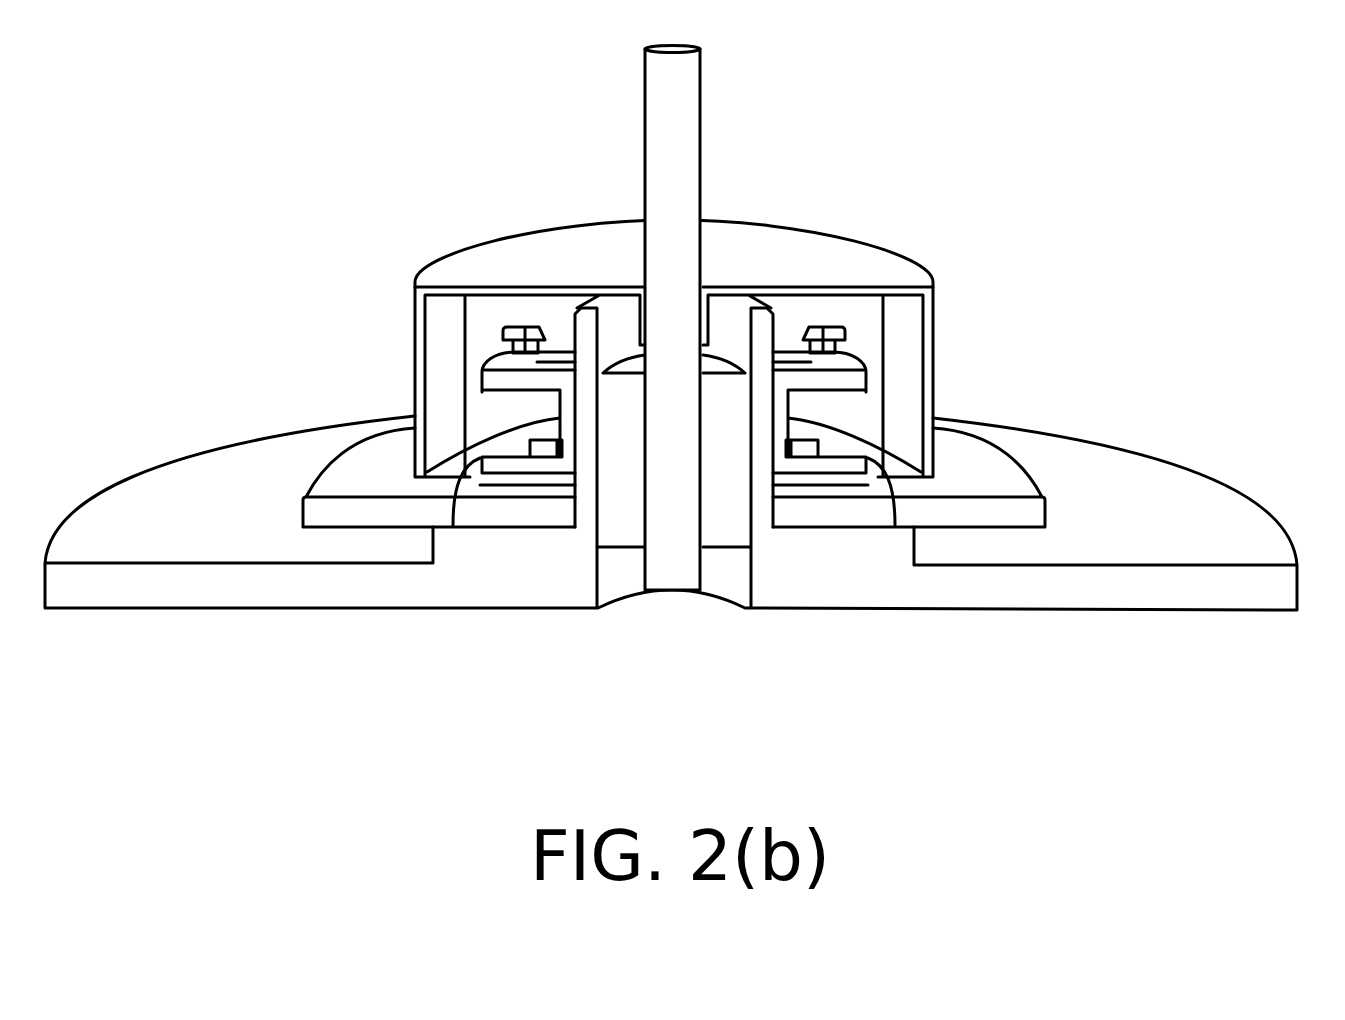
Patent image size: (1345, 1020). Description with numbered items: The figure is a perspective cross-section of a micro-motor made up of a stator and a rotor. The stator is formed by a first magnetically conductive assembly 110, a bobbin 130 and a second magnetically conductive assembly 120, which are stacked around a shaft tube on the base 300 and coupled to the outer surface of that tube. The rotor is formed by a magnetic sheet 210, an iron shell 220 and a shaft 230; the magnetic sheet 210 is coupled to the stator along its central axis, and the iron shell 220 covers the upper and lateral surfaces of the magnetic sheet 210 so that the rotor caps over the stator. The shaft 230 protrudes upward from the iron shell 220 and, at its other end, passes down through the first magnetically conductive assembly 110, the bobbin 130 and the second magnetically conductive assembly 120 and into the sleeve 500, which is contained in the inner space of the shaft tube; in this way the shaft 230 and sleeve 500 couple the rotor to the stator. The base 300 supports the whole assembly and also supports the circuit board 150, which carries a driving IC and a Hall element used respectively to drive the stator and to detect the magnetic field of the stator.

The first magnetically conductive assembly 110 is at (525, 485).
The second magnetically conductive assembly 120 is at (558, 323).
The bobbin 130 is at (520, 437).
The circuit board 150 is at (983, 470).
The magnetic sheet 210 is at (902, 362).
The iron shell 220 is at (788, 258).
The shaft 230 is at (668, 533).
The base 300 is at (1140, 535).
The sleeve 500 is at (623, 483).